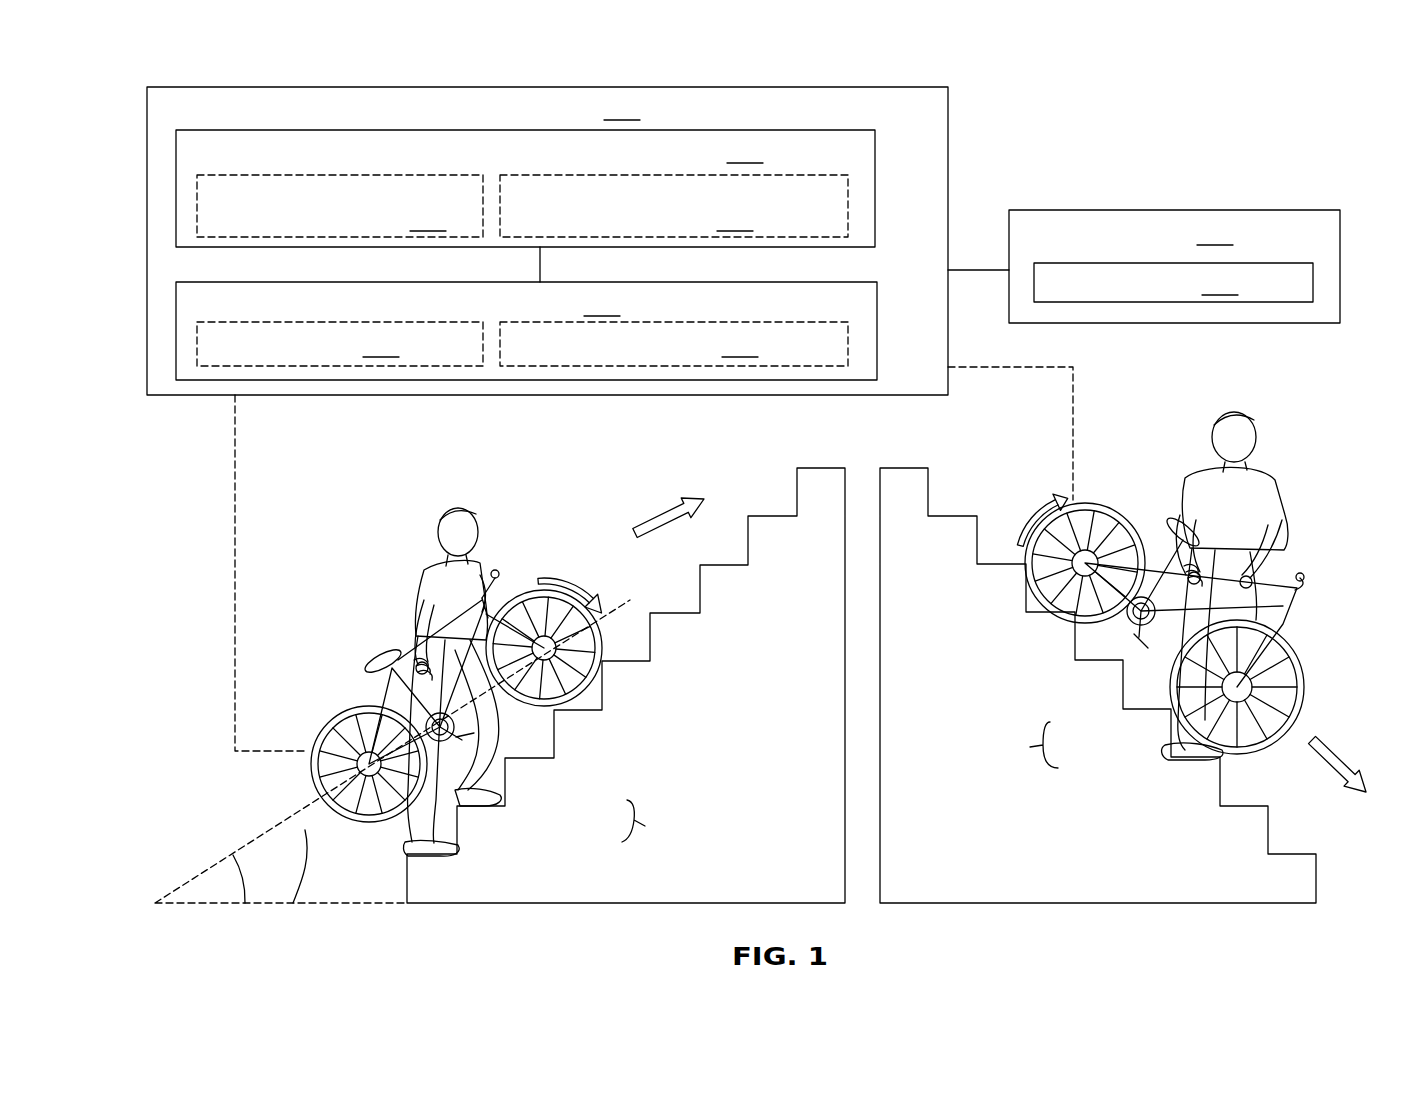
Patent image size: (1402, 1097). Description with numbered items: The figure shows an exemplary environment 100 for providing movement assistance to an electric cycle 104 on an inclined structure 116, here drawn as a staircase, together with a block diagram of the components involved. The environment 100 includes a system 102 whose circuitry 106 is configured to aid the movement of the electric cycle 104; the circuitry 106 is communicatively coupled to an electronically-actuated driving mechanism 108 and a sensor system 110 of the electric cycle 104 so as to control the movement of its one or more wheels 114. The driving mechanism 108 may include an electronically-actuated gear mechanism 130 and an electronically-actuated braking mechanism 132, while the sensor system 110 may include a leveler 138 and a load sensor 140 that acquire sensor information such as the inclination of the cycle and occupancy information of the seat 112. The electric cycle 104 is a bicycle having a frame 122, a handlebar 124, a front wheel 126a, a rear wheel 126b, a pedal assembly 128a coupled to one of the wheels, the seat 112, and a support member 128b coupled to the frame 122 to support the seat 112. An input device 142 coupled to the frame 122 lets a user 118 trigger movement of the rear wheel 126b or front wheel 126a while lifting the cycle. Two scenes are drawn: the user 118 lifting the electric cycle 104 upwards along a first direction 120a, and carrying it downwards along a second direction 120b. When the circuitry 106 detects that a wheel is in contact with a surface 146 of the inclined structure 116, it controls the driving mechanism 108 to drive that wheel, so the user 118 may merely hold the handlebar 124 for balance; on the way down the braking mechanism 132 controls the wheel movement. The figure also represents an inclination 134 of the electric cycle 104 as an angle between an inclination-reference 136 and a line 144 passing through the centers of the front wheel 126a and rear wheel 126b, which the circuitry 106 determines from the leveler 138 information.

The exemplary environment 100 is at (1238, 113).
The system 102 is at (1174, 266).
The electric cycle 104 is at (405, 555).
The circuitry 106 is at (1173, 282).
The electronically-actuated driving mechanism 108 is at (525, 188).
The sensor system 110 is at (526, 331).
The seat 112 is at (368, 656).
The one or more wheels 114 is at (840, 782).
The inclined structure 116 is at (797, 468).
The user 118 is at (456, 510).
The first direction 120a is at (647, 531).
The second direction 120b is at (1310, 730).
The frame 122 is at (420, 604).
The handlebar 124 is at (495, 568).
The front wheel 126a is at (583, 697).
The rear wheel 126b is at (360, 835).
The pedal assembly 128a is at (480, 748).
The support member 128b is at (400, 688).
The electronically-actuated gear mechanism 130 is at (340, 206).
The electronically-actuated braking mechanism 132 is at (674, 206).
The inclination 134 is at (233, 855).
The inclination-reference 136 is at (305, 830).
The leveler 138 is at (340, 344).
The load sensor 140 is at (674, 344).
The input device 142 is at (400, 646).
The line 144 is at (613, 597).
The surface 146 is at (620, 675).